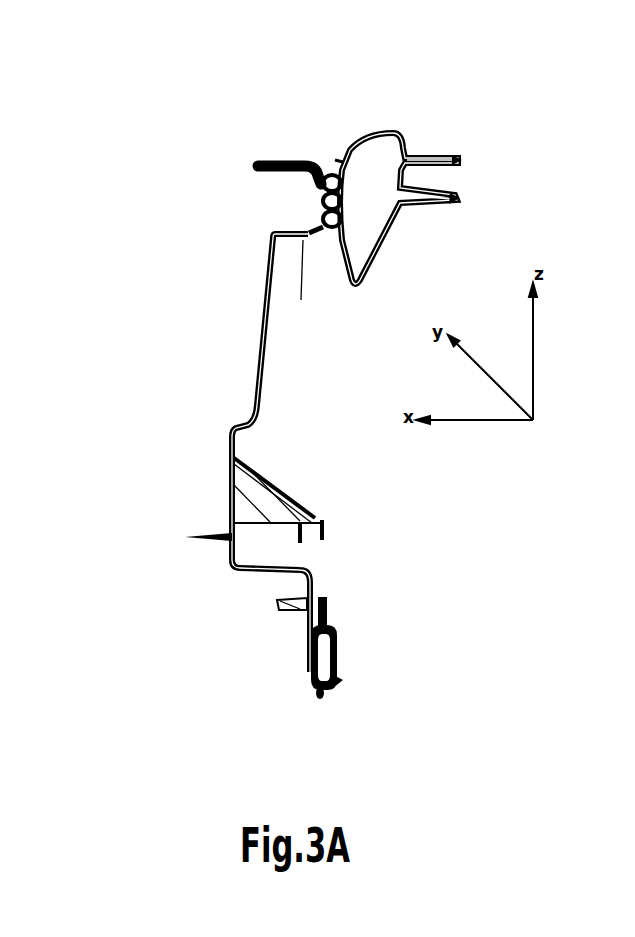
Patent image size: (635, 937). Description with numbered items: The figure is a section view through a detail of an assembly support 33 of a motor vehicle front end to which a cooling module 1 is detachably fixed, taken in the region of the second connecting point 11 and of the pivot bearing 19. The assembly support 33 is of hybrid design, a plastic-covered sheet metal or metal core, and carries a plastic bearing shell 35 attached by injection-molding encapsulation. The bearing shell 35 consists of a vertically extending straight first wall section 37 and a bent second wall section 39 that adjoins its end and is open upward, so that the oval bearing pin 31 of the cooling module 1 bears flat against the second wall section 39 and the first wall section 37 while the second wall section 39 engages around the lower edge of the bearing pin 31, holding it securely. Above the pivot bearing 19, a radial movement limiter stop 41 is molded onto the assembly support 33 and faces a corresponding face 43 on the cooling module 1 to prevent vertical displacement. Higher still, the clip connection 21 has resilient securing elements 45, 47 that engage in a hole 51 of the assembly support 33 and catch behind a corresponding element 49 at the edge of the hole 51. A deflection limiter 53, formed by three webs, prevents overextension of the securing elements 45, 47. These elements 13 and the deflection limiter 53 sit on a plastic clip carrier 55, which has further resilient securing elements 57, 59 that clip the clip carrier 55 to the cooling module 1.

The cooling module 1 is at (368, 574).
The second connecting point 11 is at (375, 643).
The wind deflector strip 13 is at (332, 128).
The pivot bearing 19 is at (354, 628).
The clip connection 21 is at (311, 148).
The bearing pin 31 is at (338, 660).
The assembly support 33 is at (240, 350).
The bearing shell 35 is at (297, 700).
The first wall section 37 is at (308, 653).
The second wall section 39 is at (337, 687).
The radial movement limiter stop 41 is at (293, 512).
The corresponding face 43 is at (330, 523).
The securing element 45 is at (307, 208).
The securing element 47 is at (300, 184).
The corresponding element 49 is at (301, 300).
The hole 51 is at (300, 196).
The deflection limiter 53 is at (335, 158).
The clip carrier 55 is at (397, 133).
The further securing element 57 is at (452, 150).
The further securing element 59 is at (447, 206).